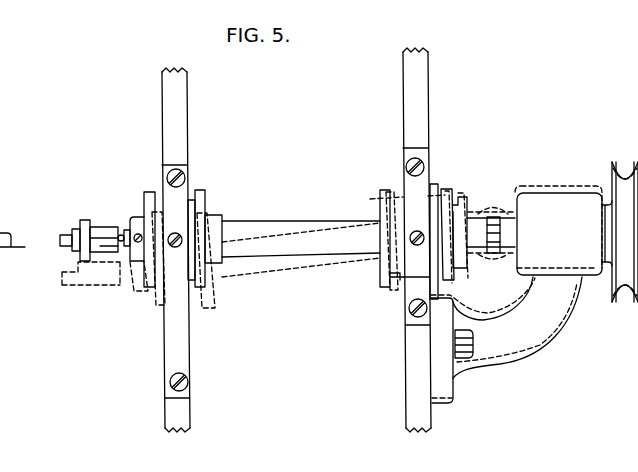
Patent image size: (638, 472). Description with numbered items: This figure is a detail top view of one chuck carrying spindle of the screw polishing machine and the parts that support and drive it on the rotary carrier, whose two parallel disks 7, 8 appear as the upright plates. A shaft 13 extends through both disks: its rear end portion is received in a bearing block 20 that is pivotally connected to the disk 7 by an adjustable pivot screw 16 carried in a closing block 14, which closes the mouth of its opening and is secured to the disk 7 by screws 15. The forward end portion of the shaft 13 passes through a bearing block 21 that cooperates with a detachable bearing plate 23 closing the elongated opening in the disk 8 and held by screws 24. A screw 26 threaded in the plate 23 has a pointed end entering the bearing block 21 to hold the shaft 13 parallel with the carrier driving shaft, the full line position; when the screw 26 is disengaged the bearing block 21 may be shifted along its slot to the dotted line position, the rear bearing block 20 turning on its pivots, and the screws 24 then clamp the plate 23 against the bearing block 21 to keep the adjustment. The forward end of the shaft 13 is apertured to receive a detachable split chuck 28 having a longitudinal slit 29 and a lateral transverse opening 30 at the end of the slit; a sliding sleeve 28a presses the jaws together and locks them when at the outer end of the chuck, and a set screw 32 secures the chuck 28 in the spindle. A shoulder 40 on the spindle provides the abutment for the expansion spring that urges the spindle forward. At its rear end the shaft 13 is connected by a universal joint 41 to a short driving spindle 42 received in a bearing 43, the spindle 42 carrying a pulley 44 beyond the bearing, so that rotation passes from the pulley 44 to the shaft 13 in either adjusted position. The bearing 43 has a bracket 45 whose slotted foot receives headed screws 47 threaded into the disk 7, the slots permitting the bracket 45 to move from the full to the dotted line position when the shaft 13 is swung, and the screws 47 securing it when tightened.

The disk 7 is at (404, 104).
The disk 8 is at (182, 88).
The shaft 13 is at (245, 228).
The closing block 14 is at (423, 242).
The screws 15 is at (421, 157).
The adjustable pivot screw 16 is at (420, 250).
The bearing block 20 is at (435, 205).
The bearing block 21 is at (190, 205).
The bearing plate 23 is at (176, 361).
The screws 24 is at (192, 171).
The screw 26 is at (177, 251).
The chuck 28 is at (128, 253).
The sliding sleeve 28a is at (82, 247).
The longitudinal slit 29 is at (97, 227).
The transverse opening 30 is at (122, 234).
The set screw 32 is at (137, 243).
The shoulder 40 is at (221, 220).
The universal joint 41 is at (498, 249).
The driving spindle 42 is at (513, 230).
The bearing 43 is at (565, 200).
The pulley 44 is at (615, 292).
The bracket 45 is at (506, 340).
The headed screws 47 is at (473, 345).